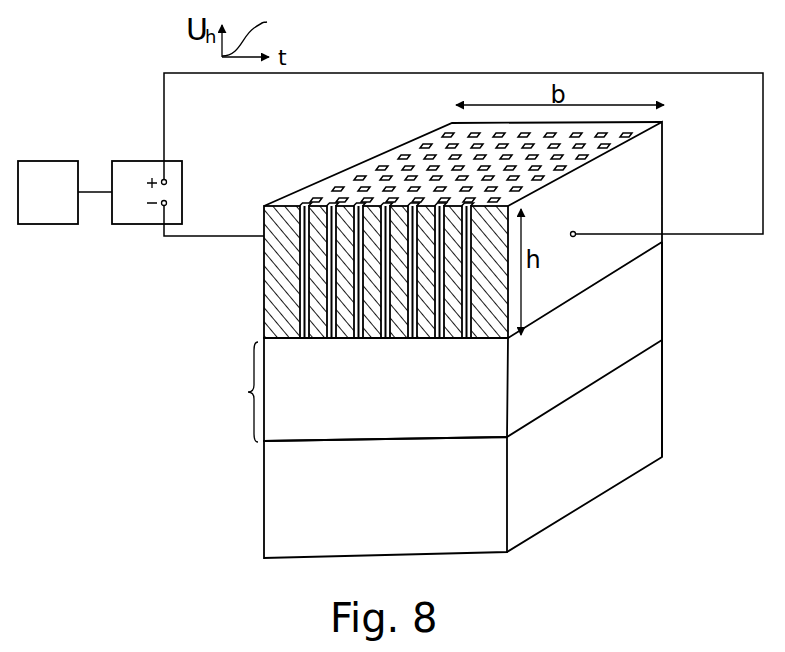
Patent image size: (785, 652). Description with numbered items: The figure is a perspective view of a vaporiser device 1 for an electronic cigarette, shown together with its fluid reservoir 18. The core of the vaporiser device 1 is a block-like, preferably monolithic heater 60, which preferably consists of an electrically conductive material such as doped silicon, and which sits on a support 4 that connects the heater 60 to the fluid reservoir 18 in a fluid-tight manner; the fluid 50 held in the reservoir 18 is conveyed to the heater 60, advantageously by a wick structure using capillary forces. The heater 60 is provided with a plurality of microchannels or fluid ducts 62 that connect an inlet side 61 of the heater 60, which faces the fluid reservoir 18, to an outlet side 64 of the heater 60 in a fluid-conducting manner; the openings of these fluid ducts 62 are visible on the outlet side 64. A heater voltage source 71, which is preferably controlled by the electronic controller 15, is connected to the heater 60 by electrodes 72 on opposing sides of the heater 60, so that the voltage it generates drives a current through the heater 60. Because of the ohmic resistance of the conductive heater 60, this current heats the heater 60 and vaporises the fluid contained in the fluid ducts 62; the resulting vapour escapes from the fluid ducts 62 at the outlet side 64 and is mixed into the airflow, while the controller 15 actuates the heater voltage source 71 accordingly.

The vaporiser device 1 is at (676, 289).
The support 4 is at (242, 392).
The electronic controller 15 is at (35, 207).
The fluid reservoir 18 is at (662, 392).
The fluid 50 is at (362, 506).
The heater 60 is at (398, 238).
The inlet side 61 is at (426, 341).
The fluid ducts 62 is at (352, 289).
The outlet side 64 is at (343, 190).
The heater voltage source 71 is at (182, 190).
The electrodes 72 is at (574, 231).